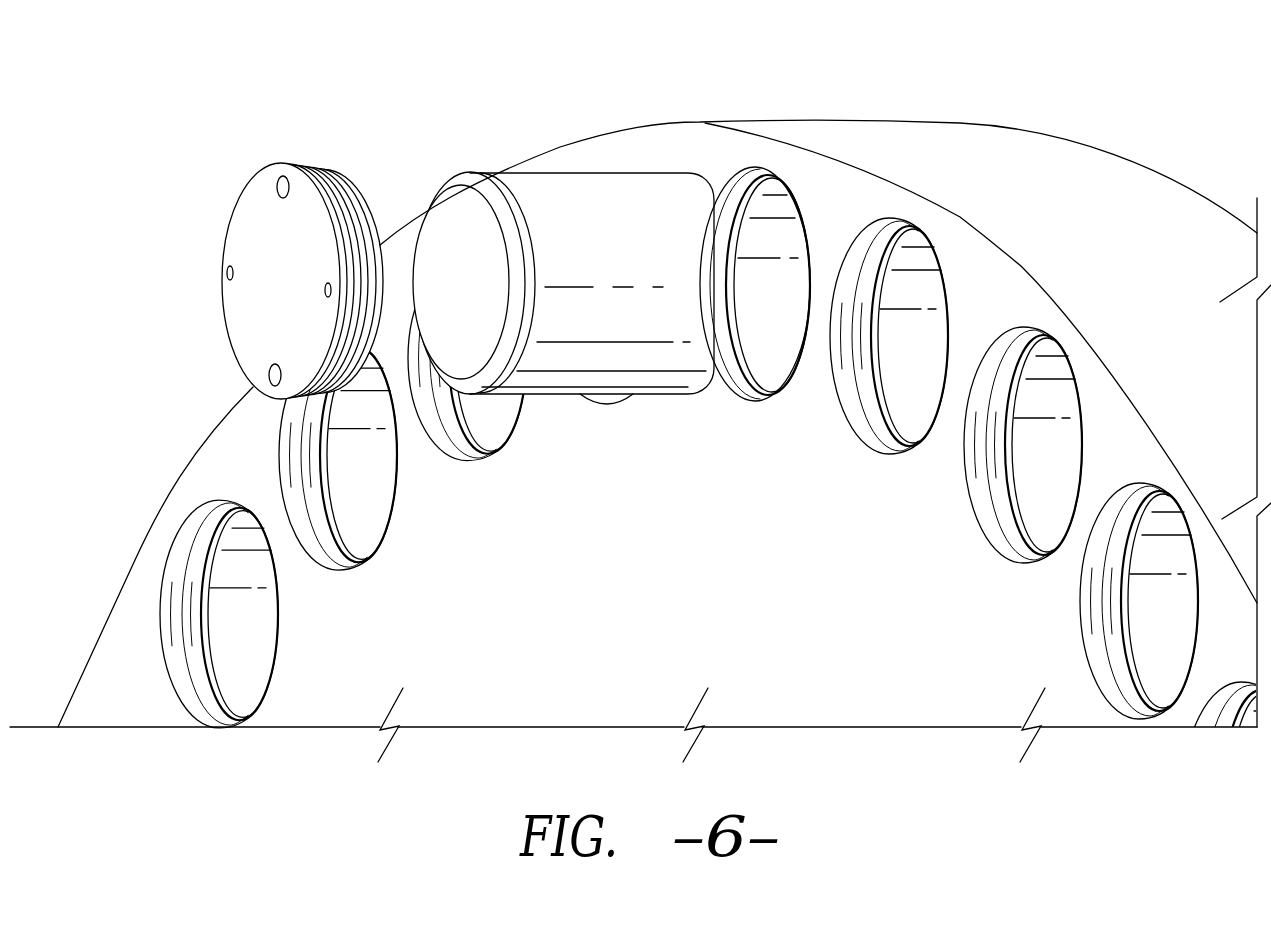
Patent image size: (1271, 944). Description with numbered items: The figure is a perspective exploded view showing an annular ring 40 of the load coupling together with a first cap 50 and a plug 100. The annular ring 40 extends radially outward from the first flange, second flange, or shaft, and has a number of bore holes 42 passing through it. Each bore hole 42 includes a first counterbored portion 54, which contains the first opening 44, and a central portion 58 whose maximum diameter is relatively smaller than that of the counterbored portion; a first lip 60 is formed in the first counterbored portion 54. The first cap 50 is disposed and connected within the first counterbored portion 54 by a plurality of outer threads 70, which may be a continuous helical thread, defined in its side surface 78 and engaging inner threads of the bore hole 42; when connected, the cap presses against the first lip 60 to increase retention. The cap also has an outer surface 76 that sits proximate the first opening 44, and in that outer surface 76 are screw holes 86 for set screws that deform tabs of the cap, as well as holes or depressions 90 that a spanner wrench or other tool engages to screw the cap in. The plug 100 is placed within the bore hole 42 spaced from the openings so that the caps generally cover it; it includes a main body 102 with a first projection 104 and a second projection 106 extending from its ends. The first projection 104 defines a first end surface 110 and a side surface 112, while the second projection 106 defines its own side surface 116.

The annular ring 40 is at (1022, 266).
The bore hole 42 is at (951, 212).
The first opening 44 is at (858, 227).
The first cap 50 is at (297, 150).
The first counterbored portion 54 is at (728, 190).
The central portion 58 is at (772, 224).
The first lip 60 is at (751, 385).
The outer threads 70 is at (358, 224).
The outer surface 76 is at (247, 230).
The side surface 78 is at (362, 358).
The screw hole 86 is at (227, 277).
The holes or depressions 90 is at (260, 390).
The plug 100 is at (558, 170).
The main body 102 is at (630, 355).
The first projection 104 is at (511, 350).
The second projection 106 is at (717, 362).
The first end surface 110 is at (465, 355).
The side surface 112 is at (500, 198).
The side surface 116 is at (712, 244).